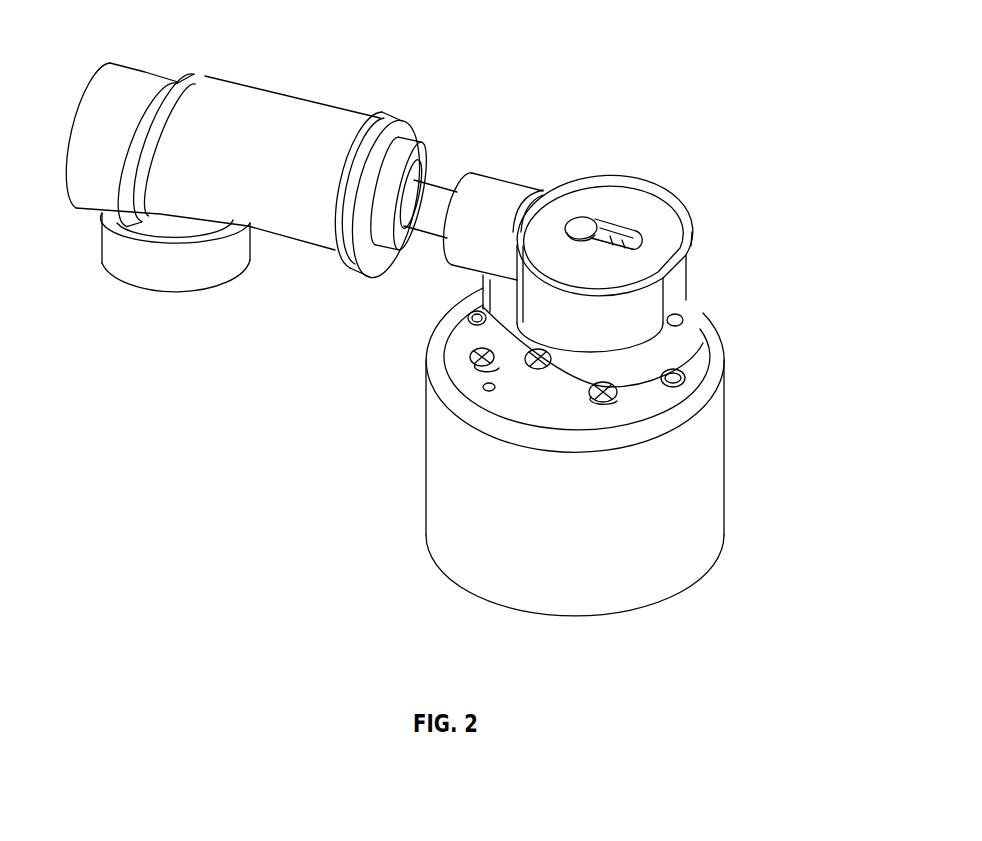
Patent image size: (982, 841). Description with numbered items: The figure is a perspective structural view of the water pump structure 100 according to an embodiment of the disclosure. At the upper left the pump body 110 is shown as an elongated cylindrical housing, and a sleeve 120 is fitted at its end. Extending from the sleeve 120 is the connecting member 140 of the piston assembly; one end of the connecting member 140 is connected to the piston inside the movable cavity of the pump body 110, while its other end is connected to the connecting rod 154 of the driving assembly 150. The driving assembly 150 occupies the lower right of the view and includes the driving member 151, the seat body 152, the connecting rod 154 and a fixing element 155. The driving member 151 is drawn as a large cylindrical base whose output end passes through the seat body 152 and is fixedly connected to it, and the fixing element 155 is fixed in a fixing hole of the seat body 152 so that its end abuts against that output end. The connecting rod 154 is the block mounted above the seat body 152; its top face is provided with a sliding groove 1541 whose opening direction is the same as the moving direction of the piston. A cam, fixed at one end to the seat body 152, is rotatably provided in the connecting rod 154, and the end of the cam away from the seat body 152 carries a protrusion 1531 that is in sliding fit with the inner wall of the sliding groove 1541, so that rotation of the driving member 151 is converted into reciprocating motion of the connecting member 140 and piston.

The water pump structure 100 is at (790, 43).
The pump body 110 is at (213, 95).
The sleeve 120 is at (387, 148).
The connecting member 140 is at (428, 215).
The driving assembly 150 is at (571, 393).
The driving member 151 is at (706, 458).
The seat body 152 is at (637, 359).
The connecting rod 154 is at (652, 242).
The fixing element 155 is at (528, 362).
The protrusion 1531 is at (582, 218).
The sliding groove 1541 is at (644, 236).